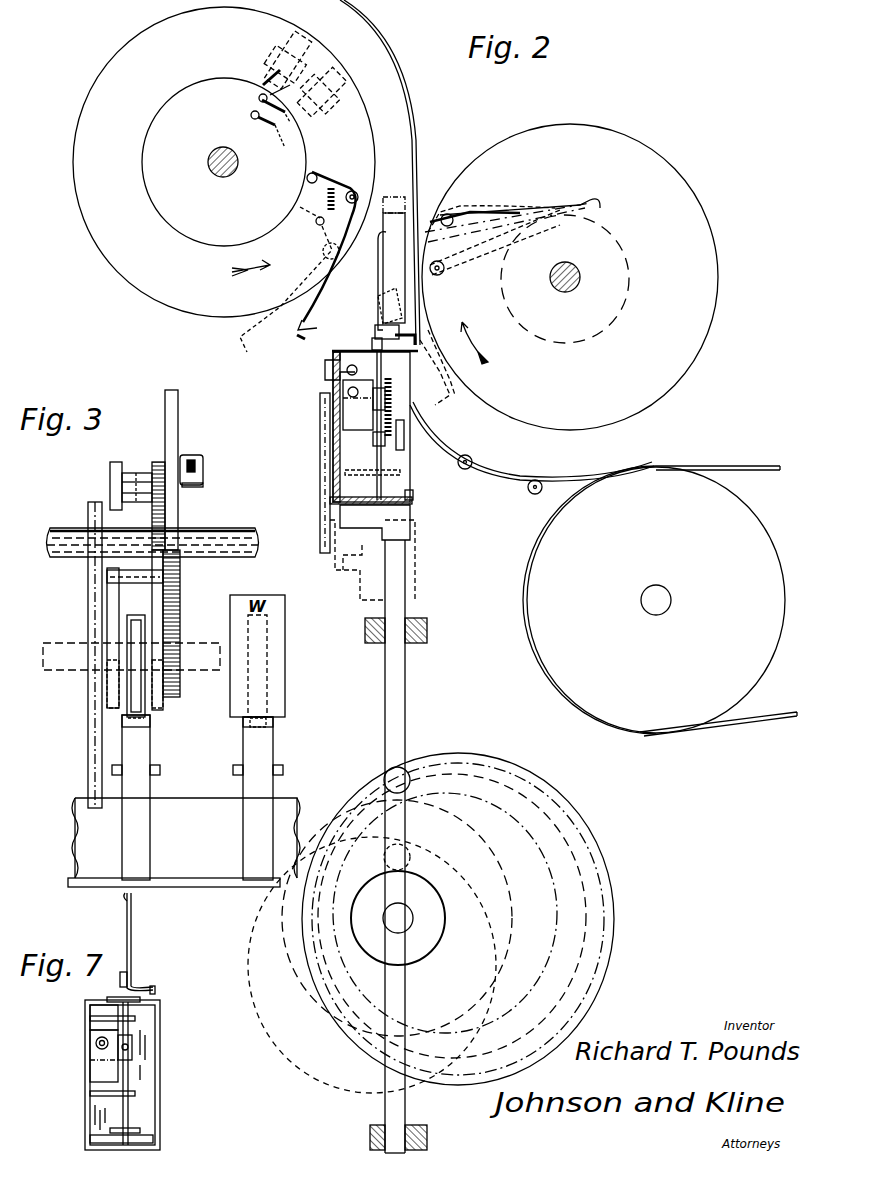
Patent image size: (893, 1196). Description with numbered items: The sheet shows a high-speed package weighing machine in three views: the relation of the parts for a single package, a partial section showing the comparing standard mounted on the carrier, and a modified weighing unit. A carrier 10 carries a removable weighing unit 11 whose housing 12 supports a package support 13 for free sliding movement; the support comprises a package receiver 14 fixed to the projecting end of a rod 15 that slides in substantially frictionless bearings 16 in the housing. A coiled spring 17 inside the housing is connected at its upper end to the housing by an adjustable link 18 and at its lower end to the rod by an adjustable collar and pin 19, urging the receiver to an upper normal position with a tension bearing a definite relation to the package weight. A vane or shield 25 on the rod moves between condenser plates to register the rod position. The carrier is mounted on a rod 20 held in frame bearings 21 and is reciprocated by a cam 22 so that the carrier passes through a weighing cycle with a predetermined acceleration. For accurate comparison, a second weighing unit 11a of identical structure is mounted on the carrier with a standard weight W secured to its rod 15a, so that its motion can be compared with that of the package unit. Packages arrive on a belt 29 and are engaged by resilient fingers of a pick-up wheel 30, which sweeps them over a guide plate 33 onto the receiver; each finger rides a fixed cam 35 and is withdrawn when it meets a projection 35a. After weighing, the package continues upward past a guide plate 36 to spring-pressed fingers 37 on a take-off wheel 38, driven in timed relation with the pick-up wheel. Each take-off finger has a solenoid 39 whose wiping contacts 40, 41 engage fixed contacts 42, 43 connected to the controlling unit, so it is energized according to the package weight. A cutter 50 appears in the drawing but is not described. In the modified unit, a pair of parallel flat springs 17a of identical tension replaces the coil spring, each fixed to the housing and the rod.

In FIG. 2, the carrier 10 is at (395, 520).
In FIG. 3, the carrier 10 is at (196, 868).
In FIG. 3, the weighing unit 11 is at (158, 784).
In FIG. 3, the second weighing unit 11a is at (276, 756).
In FIG. 2, the housing 12 is at (350, 476).
In FIG. 3, the housing 12 is at (150, 750).
In FIG. 7, the housing 12 is at (93, 1023).
In FIG. 2, the package support 13 is at (380, 322).
In FIG. 7, the package support 13 is at (168, 992).
In FIG. 2, the package receiver 14 is at (382, 264).
In FIG. 3, the package receiver 14 is at (135, 637).
In FIG. 7, the package receiver 14 is at (132, 943).
In FIG. 2, the rod 15 is at (340, 466).
In FIG. 3, the rod 15 is at (170, 666).
In FIG. 7, the rod 15 is at (130, 1072).
In FIG. 3, the rod of comparing unit 15a is at (268, 724).
In FIG. 2, the frictionless bearings 16 is at (374, 343).
In FIG. 2, the coiled spring 17 is at (440, 398).
In FIG. 7, the parallel flat springs 17a is at (118, 1030).
In FIG. 2, the adjustable link 18 is at (348, 346).
In FIG. 2, the adjustable collar and pin 19 is at (375, 443).
In FIG. 2, the rod 20 is at (405, 678).
In FIG. 2, the frame bearings 21 is at (427, 625).
In FIG. 2, the cam 22 is at (605, 984).
In FIG. 7, the vane or shield 25 is at (97, 1052).
In FIG. 2, the belt 29 is at (737, 464).
In FIG. 2, the pick-up wheel 30 is at (690, 360).
In FIG. 2, the guide plate 33 is at (510, 470).
In FIG. 2, the fixed cam 35 is at (632, 270).
In FIG. 2, the projection 35a is at (598, 205).
In FIG. 2, the guide plate 36 is at (420, 103).
In FIG. 2, the spring-pressed fingers 37 is at (300, 332).
In FIG. 3, the spring-pressed fingers 37 is at (153, 685).
In FIG. 2, the take-off wheel 38 is at (355, 120).
In FIG. 3, the take-off wheel 38 is at (172, 420).
In FIG. 3, the solenoid 39 is at (204, 465).
In FIG. 2, the wiping contact 40 is at (289, 101).
In FIG. 2, the wiping contact 41 is at (258, 120).
In FIG. 2, the fixed contact 42 is at (258, 100).
In FIG. 2, the fixed contact 43 is at (266, 92).
In FIG. 2, the cutter 50 is at (312, 44).
In FIG. 3, the cutter 50 is at (196, 458).